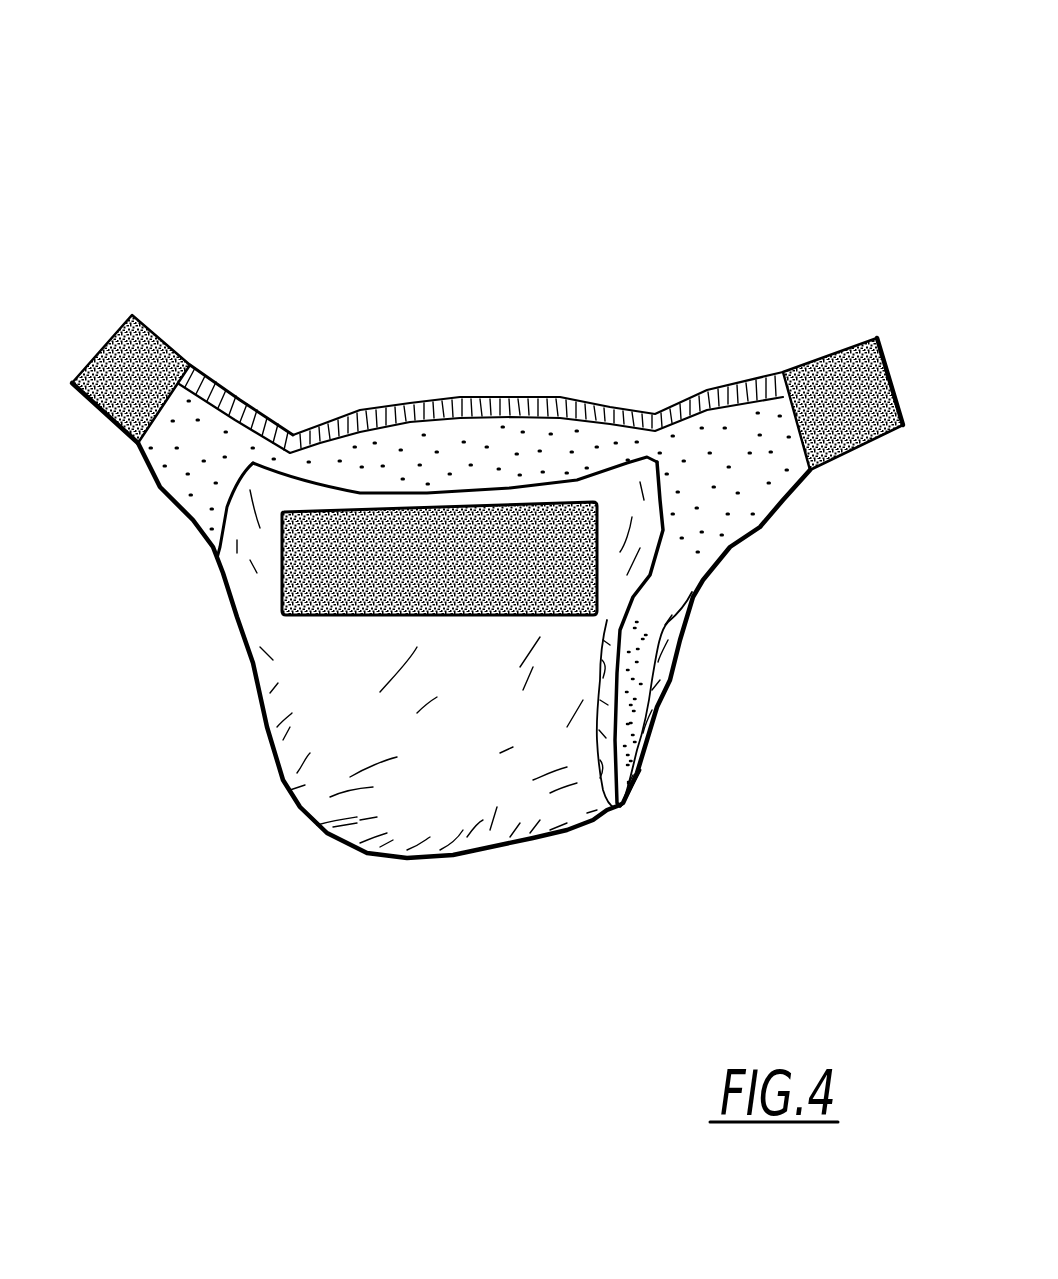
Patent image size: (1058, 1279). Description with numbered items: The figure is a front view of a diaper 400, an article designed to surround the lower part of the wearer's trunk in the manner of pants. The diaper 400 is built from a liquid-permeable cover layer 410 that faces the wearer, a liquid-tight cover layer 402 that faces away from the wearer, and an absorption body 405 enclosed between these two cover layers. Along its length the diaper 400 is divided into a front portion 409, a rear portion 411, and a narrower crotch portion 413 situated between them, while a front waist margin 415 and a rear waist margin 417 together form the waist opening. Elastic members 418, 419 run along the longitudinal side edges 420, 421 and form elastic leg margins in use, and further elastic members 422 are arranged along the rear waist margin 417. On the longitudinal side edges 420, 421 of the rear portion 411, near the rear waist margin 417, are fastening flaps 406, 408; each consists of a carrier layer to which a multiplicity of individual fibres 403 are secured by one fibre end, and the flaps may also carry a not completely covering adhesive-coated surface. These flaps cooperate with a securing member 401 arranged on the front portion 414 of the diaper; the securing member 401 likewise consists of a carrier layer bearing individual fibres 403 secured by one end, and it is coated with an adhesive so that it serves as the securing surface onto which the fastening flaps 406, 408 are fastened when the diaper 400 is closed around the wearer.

The diaper 400 is at (652, 165).
The securing member 401 is at (597, 585).
The liquid-tight cover layer 402 is at (318, 825).
The individual fibres 403 is at (597, 545).
The absorption body 405 is at (643, 773).
The fastening flap 406 is at (840, 347).
The fastening flap 408 is at (107, 345).
The front portion 409 is at (333, 695).
The liquid-permeable cover layer 410 is at (627, 702).
The rear portion 411 is at (572, 455).
The crotch portion 413 is at (480, 850).
The front portion 414 is at (323, 577).
The front waist margin 415 is at (423, 493).
The rear waist margin 417 is at (340, 418).
The elastic member 418 is at (283, 772).
The elastic member 419 is at (667, 732).
The longitudinal side edge 420 is at (262, 724).
The longitudinal side edge 421 is at (675, 662).
The elastic members 422 is at (545, 400).